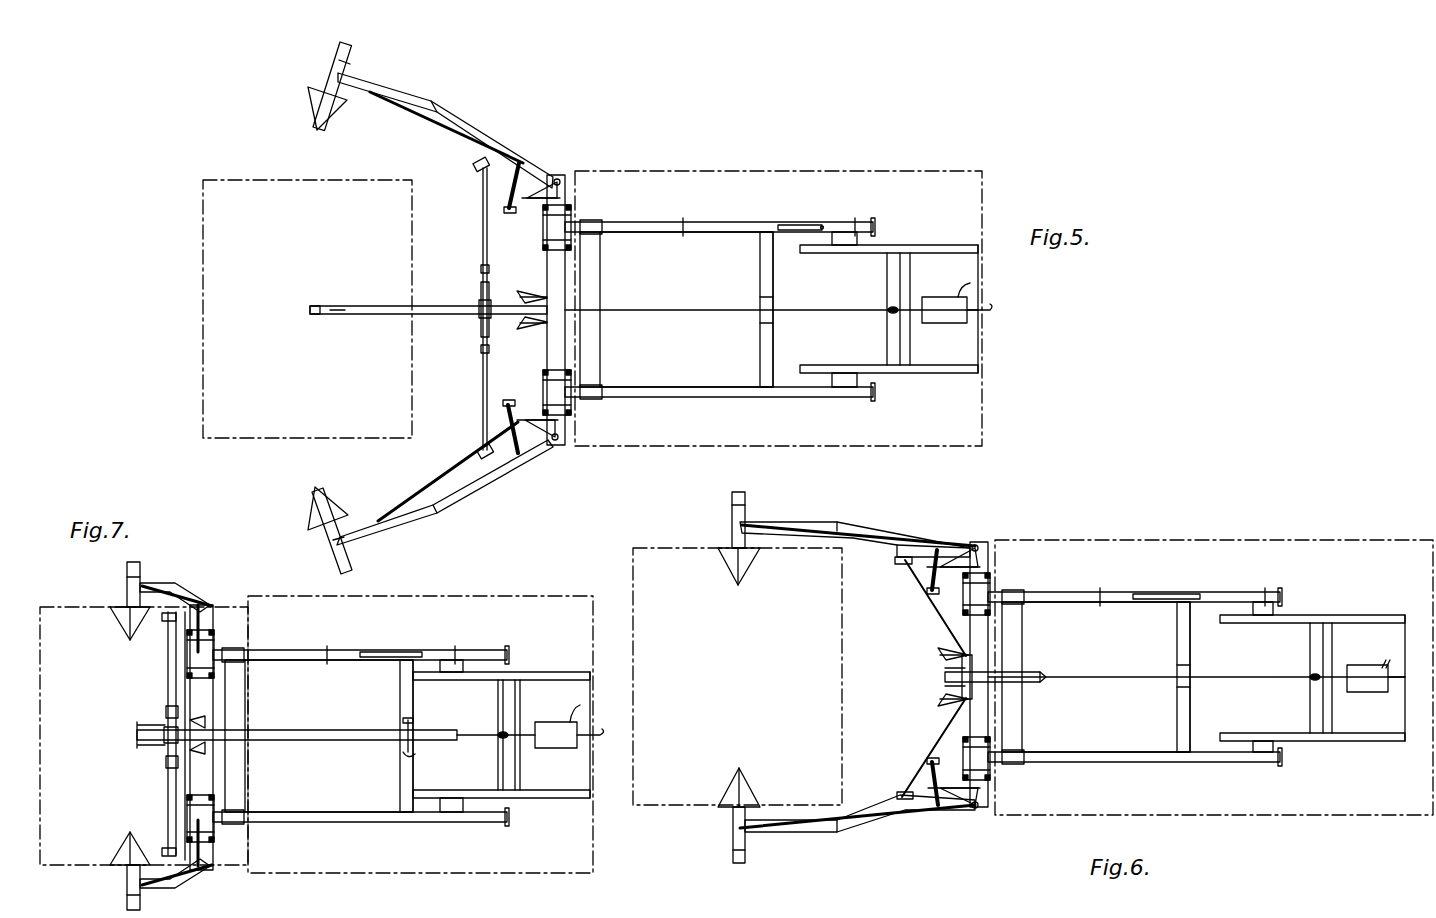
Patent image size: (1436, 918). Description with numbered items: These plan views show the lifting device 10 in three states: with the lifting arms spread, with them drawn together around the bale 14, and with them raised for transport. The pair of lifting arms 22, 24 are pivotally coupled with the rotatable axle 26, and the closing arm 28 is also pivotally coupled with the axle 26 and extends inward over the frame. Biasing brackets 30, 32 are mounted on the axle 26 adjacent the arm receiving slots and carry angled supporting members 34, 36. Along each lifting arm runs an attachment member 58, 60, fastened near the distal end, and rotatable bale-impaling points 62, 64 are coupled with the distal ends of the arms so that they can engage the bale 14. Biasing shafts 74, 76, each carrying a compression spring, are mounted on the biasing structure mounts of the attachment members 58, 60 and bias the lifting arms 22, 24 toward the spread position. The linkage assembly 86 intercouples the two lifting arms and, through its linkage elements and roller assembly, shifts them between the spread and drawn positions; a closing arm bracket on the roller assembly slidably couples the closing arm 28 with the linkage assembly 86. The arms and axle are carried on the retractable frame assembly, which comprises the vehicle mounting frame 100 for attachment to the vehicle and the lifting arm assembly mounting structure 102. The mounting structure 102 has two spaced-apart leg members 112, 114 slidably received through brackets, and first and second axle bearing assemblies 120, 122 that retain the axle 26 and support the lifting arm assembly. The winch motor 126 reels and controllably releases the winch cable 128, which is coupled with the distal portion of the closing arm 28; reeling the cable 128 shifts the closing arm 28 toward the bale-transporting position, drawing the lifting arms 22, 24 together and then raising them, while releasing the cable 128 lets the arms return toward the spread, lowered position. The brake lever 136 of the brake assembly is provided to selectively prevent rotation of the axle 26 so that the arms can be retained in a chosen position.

In FIG. 5, the lifting device 10 is at (791, 146).
In FIG. 6, the lifting device 10 is at (1203, 514).
In FIG. 5, the bale 14 is at (265, 393).
In FIG. 6, the bale 14 is at (712, 785).
In FIG. 7, the bale 14 is at (83, 637).
In FIG. 5, the lifting arm 22 is at (437, 112).
In FIG. 6, the lifting arm 22 is at (850, 528).
In FIG. 7, the lifting arm 22 is at (163, 583).
In FIG. 5, the lifting arm 24 is at (411, 517).
In FIG. 6, the lifting arm 24 is at (823, 828).
In FIG. 7, the lifting arm 24 is at (162, 887).
In FIG. 5, the rotatable axle 26 is at (563, 191).
In FIG. 6, the rotatable axle 26 is at (990, 556).
In FIG. 7, the rotatable axle 26 is at (202, 698).
In FIG. 5, the closing arm 28 is at (360, 304).
In FIG. 6, the closing arm 28 is at (1034, 672).
In FIG. 7, the closing arm 28 is at (355, 737).
In FIG. 5, the biasing bracket 30 is at (541, 178).
In FIG. 6, the biasing bracket 30 is at (969, 546).
In FIG. 5, the biasing bracket 32 is at (534, 455).
In FIG. 6, the biasing bracket 32 is at (975, 810).
In FIG. 6, the supporting member 34 is at (958, 546).
In FIG. 6, the supporting member 36 is at (963, 807).
In FIG. 5, the attachment member 58 is at (462, 132).
In FIG. 5, the attachment member 60 is at (432, 505).
In FIG. 5, the bale-impaling point 62 is at (304, 102).
In FIG. 6, the bale-impaling point 62 is at (747, 563).
In FIG. 7, the bale-impaling point 62 is at (125, 623).
In FIG. 5, the bale-impaling point 64 is at (316, 514).
In FIG. 6, the bale-impaling point 64 is at (750, 797).
In FIG. 7, the bale-impaling point 64 is at (122, 857).
In FIG. 5, the biasing shaft 74 is at (514, 212).
In FIG. 6, the biasing shaft 74 is at (925, 580).
In FIG. 5, the biasing shaft 76 is at (512, 403).
In FIG. 6, the biasing shaft 76 is at (930, 775).
In FIG. 5, the linkage assembly 86 is at (485, 360).
In FIG. 6, the linkage assembly 86 is at (948, 631).
In FIG. 7, the linkage assembly 86 is at (170, 683).
In FIG. 5, the vehicle mounting frame 100 is at (905, 247).
In FIG. 6, the vehicle mounting frame 100 is at (1367, 738).
In FIG. 7, the vehicle mounting frame 100 is at (560, 797).
In FIG. 5, the lifting arm assembly mounting structure 102 is at (787, 408).
In FIG. 6, the lifting arm assembly mounting structure 102 is at (1213, 782).
In FIG. 7, the lifting arm assembly mounting structure 102 is at (319, 736).
In FIG. 5, the leg member 112 is at (709, 222).
In FIG. 6, the leg member 112 is at (1225, 592).
In FIG. 7, the leg member 112 is at (487, 652).
In FIG. 5, the leg member 114 is at (718, 393).
In FIG. 6, the leg member 114 is at (1107, 758).
In FIG. 7, the leg member 114 is at (360, 817).
In FIG. 5, the first axle bearing assembly 120 is at (572, 210).
In FIG. 6, the first axle bearing assembly 120 is at (976, 594).
In FIG. 7, the first axle bearing assembly 120 is at (200, 654).
In FIG. 5, the second axle bearing assembly 122 is at (573, 412).
In FIG. 6, the second axle bearing assembly 122 is at (976, 758).
In FIG. 7, the second axle bearing assembly 122 is at (200, 818).
In FIG. 6, the winch motor 126 is at (1383, 684).
In FIG. 7, the winch motor 126 is at (557, 733).
In FIG. 5, the winch cable 128 is at (710, 308).
In FIG. 6, the winch cable 128 is at (1102, 673).
In FIG. 7, the winch cable 128 is at (483, 740).
In FIG. 5, the brake lever 136 is at (810, 227).
In FIG. 6, the brake lever 136 is at (1175, 592).
In FIG. 7, the brake lever 136 is at (382, 652).